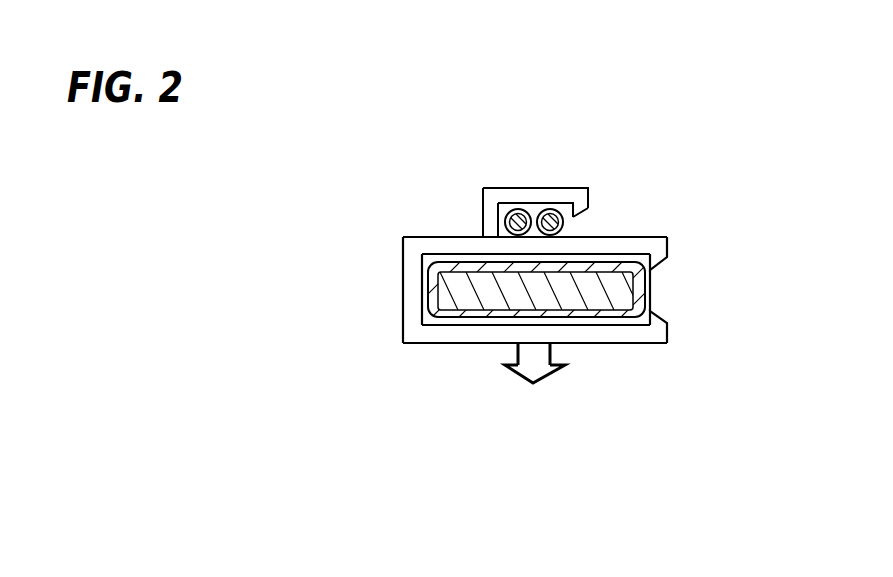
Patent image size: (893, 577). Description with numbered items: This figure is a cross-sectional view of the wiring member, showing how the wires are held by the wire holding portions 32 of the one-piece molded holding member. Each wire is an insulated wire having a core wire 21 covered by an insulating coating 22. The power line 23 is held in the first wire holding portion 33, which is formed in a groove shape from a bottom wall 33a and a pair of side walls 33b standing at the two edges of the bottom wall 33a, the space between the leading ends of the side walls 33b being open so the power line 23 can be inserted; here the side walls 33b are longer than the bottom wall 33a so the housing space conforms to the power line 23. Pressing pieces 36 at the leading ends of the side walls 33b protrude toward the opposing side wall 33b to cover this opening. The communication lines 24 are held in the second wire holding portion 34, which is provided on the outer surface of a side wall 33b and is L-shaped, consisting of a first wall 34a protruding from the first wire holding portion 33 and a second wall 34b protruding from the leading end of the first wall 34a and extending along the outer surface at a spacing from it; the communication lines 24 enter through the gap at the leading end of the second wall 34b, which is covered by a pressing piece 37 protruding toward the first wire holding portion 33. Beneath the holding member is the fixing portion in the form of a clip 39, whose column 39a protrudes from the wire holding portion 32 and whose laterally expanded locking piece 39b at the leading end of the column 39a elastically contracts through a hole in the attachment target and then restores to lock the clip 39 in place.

The core wire 21 is at (517, 210).
The insulating coating 22 is at (531, 209).
The power line 23 is at (648, 293).
The communication lines 24 is at (568, 226).
The wire holding portion 32 is at (484, 253).
The first wire holding portion 33 is at (335, 222).
The bottom wall 33a is at (413, 289).
The side walls 33b is at (437, 247).
The second wire holding portion 34 is at (421, 150).
The first wall 34a is at (490, 217).
The second wall 34b is at (507, 195).
The pressing pieces 36 is at (662, 267).
The pressing piece 37 is at (585, 212).
The clip 39 is at (560, 425).
The column 39a is at (518, 354).
The locking piece 39b is at (515, 373).